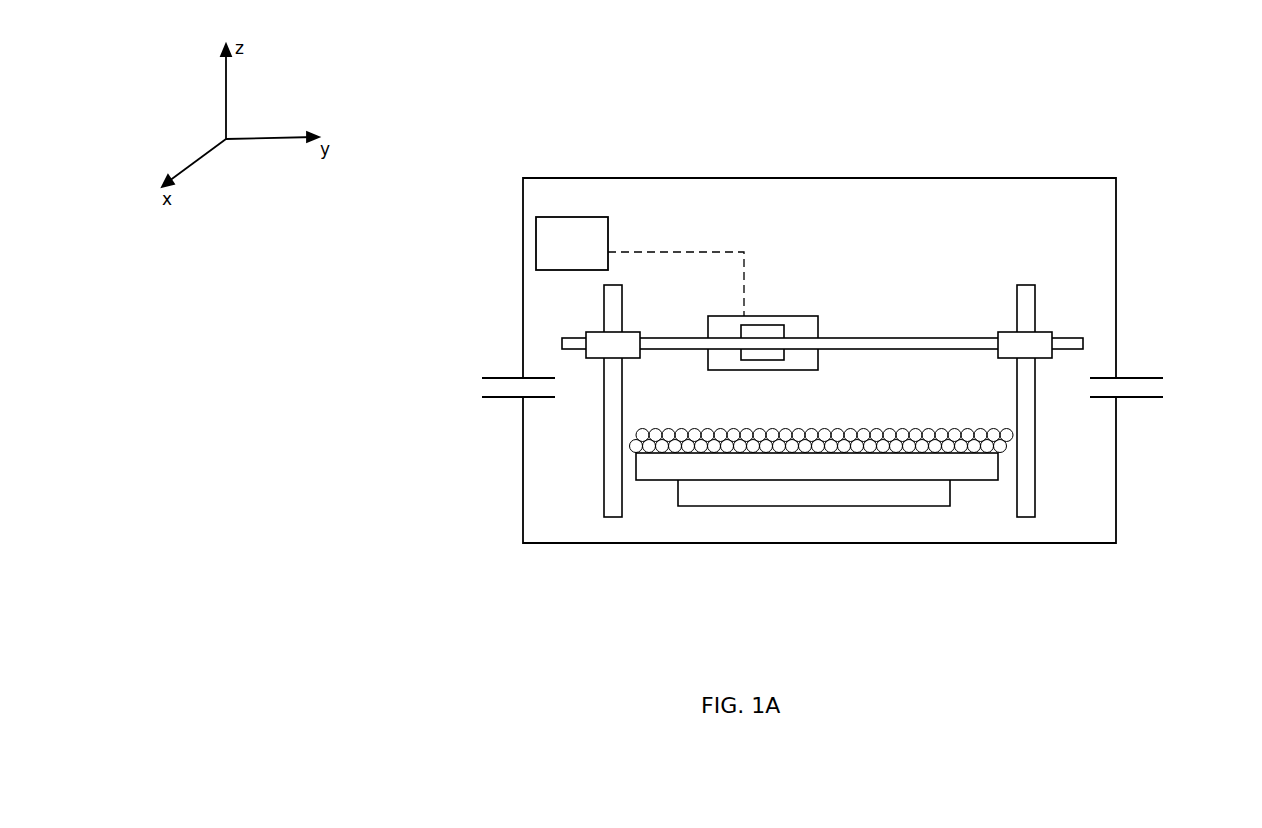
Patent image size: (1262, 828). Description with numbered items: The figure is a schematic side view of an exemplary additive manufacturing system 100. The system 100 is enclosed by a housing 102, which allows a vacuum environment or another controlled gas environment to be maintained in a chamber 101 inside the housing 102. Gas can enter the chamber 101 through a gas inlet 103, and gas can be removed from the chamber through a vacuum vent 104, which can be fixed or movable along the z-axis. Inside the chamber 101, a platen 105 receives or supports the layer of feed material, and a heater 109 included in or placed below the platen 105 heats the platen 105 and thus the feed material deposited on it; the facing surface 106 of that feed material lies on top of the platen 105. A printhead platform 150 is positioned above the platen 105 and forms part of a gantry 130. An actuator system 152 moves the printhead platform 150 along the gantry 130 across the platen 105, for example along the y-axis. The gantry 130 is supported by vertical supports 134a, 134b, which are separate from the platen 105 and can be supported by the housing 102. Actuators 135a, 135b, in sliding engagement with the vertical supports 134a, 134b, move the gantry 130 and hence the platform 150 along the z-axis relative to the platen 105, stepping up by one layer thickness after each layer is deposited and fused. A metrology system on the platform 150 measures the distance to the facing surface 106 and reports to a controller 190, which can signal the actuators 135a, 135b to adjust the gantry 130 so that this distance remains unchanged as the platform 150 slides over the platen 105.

The additive manufacturing system 100 is at (645, 88).
The chamber 101 is at (980, 226).
The housing 102 is at (740, 178).
The gas inlet 103 is at (492, 387).
The vacuum vent 104 is at (1147, 387).
The platen 105 is at (817, 466).
The facing surface 106 is at (856, 420).
The heater 109 is at (814, 493).
The gantry 130 is at (885, 337).
The vertical support 134a is at (614, 498).
The vertical support 134b is at (1028, 502).
The actuator 135a is at (602, 343).
The actuator 135b is at (1035, 340).
The printhead platform 150 is at (795, 325).
The actuator system 152 is at (768, 355).
The controller 190 is at (640, 266).